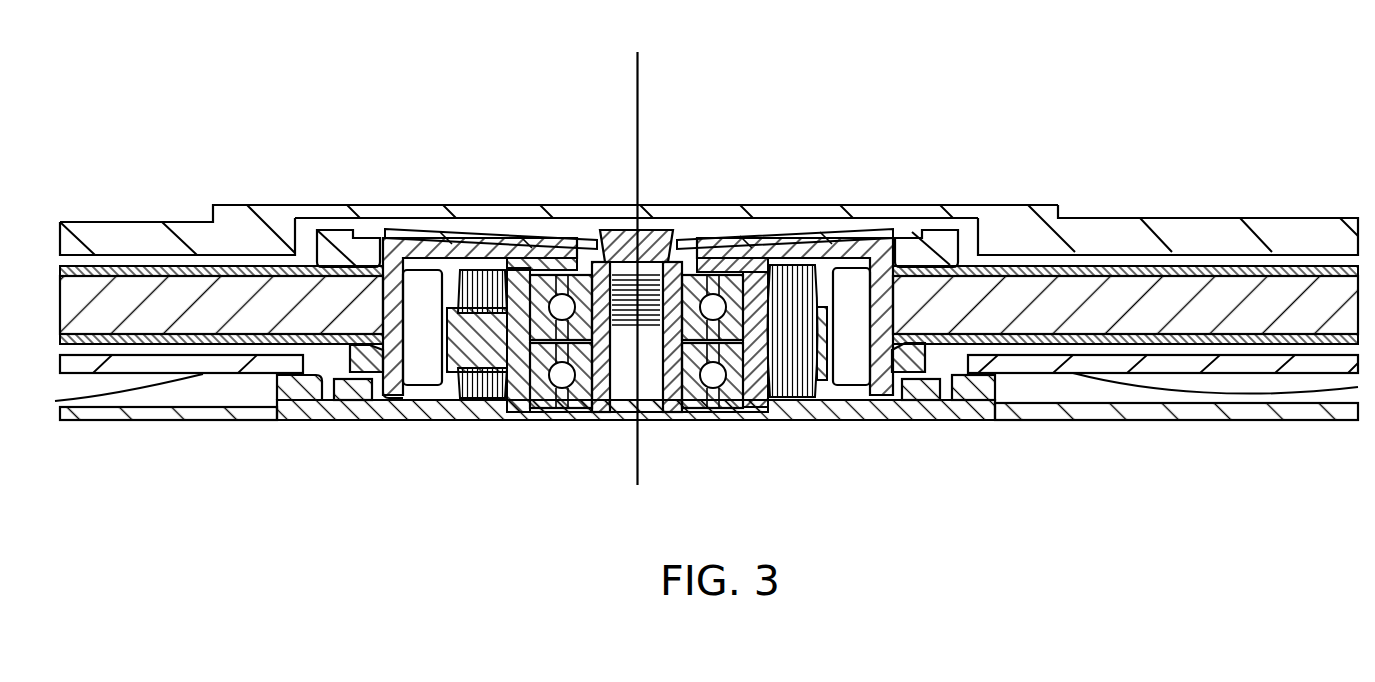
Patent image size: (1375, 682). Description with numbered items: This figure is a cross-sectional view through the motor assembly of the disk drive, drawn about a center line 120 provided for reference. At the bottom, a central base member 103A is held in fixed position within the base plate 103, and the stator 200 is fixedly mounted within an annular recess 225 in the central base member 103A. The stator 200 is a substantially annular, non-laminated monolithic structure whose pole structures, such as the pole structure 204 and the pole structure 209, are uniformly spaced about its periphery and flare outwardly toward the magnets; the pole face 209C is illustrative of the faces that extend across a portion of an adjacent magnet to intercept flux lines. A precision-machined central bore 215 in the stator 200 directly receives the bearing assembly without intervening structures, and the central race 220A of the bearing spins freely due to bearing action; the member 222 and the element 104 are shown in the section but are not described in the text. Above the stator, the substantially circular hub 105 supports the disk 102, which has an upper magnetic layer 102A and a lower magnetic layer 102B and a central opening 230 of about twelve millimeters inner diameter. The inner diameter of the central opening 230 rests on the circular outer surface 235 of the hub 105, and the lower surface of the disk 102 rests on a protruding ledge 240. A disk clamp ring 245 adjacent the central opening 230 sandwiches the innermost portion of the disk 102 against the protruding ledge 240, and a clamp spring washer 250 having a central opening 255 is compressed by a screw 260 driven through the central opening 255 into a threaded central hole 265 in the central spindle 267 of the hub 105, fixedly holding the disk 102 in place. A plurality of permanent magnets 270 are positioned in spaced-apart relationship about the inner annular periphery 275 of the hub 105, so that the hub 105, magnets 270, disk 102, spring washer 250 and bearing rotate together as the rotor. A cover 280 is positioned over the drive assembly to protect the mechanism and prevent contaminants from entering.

The center line 120 is at (638, 82).
The upper magnetic layer 102A is at (128, 270).
The disk 102 is at (185, 293).
The lower magnetic layer 102B is at (178, 362).
The base plate 103 is at (233, 418).
The central base member 103A is at (423, 413).
The top cover 104 is at (826, 248).
The hub 105 is at (884, 243).
The stator 200 is at (748, 398).
The pole structure 204 is at (748, 243).
The pole structure 209 is at (528, 262).
The pole face 209C is at (484, 340).
The central bore 215 is at (514, 411).
The central race 220A is at (686, 400).
The sleeve 222 is at (502, 405).
The annular recess 225 is at (785, 400).
The central opening 230 is at (390, 285).
The circular outer surface 235 is at (912, 360).
The protruding ledge 240 is at (357, 376).
The disk clamp ring 245 is at (333, 233).
The clamp spring washer 250 is at (447, 216).
The central opening 255 is at (586, 236).
The screw 260 is at (648, 242).
The threaded central hole 265 is at (618, 345).
The central spindle 267 is at (590, 412).
The permanent magnets 270 is at (432, 370).
The inner annular periphery 275 is at (380, 392).
The cover 280 is at (1198, 237).